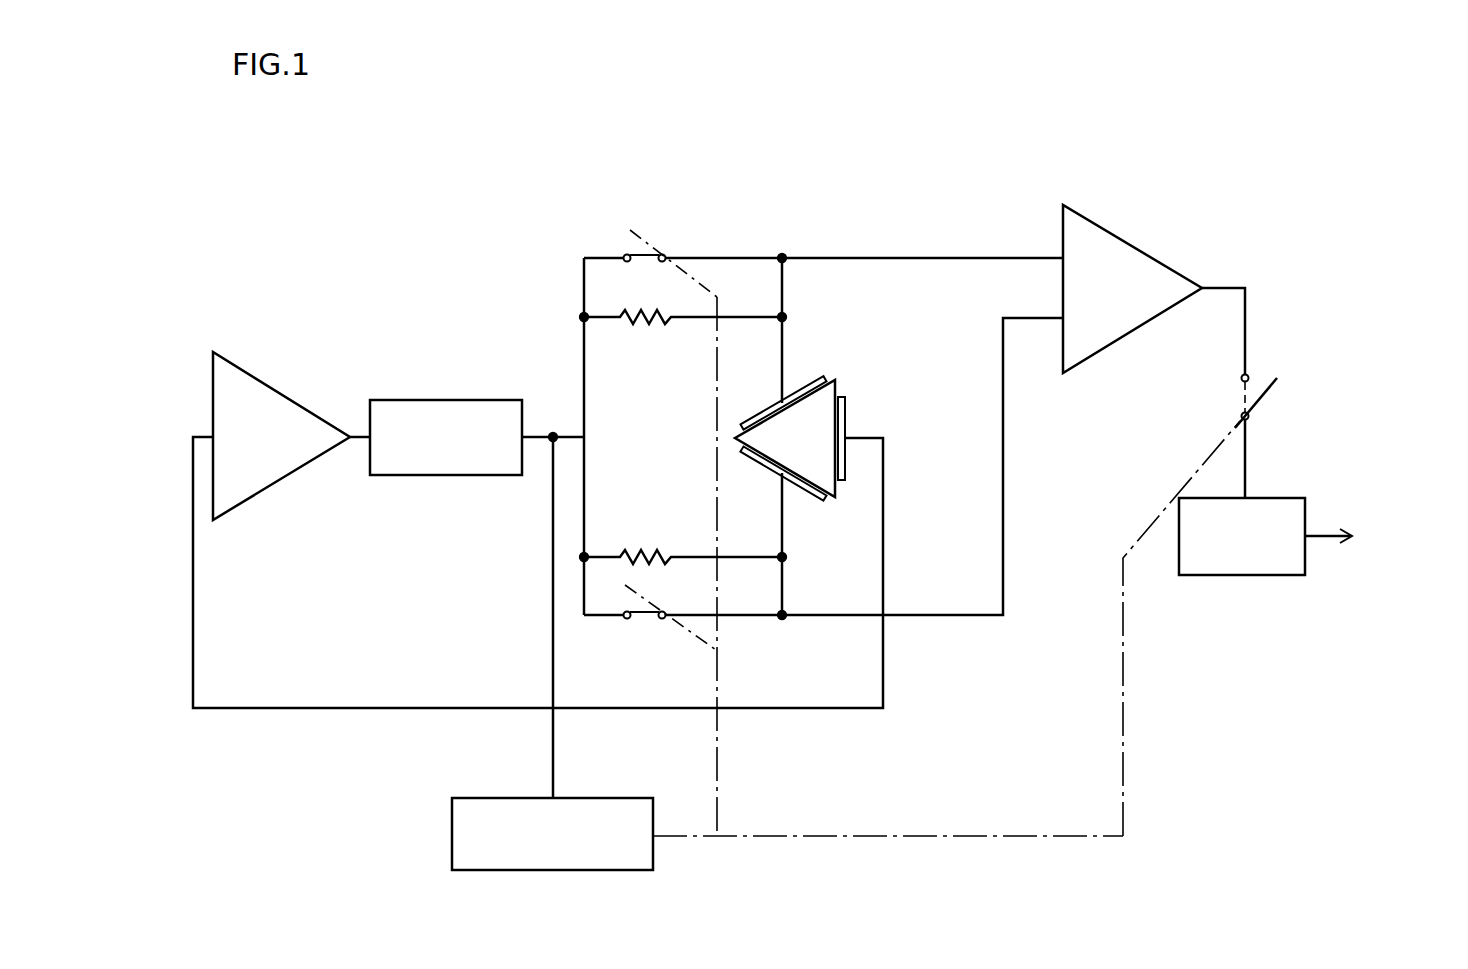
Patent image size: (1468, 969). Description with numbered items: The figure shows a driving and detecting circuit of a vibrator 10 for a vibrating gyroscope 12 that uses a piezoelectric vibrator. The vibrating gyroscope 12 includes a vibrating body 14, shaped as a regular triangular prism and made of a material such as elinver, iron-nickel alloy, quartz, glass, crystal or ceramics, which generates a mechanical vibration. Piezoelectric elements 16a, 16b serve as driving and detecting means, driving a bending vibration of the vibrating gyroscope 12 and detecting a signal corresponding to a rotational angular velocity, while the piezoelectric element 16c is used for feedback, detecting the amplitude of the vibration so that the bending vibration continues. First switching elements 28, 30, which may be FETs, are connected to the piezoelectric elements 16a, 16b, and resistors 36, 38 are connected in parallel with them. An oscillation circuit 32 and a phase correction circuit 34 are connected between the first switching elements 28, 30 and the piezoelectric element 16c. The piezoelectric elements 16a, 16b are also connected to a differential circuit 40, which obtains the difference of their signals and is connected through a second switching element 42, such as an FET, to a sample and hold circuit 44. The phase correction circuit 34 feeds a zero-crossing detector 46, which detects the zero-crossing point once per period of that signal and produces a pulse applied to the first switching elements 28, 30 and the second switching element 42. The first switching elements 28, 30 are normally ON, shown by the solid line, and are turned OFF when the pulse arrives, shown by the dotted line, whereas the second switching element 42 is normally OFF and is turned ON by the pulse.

The vibrator 10 is at (327, 243).
The vibrating gyroscope 12 is at (845, 364).
The vibrating body 14 is at (822, 477).
The piezoelectric element 16a is at (763, 458).
The piezoelectric element 16b is at (770, 410).
The piezoelectric element 16c is at (843, 420).
The first switching element 28 is at (638, 620).
The first switching element 30 is at (626, 254).
The oscillation circuit 32 is at (295, 410).
The phase correction circuit 34 is at (453, 400).
The resistor 36 is at (622, 552).
The resistor 38 is at (628, 324).
The differential circuit 40 is at (1147, 260).
The second switching element 42 is at (1237, 408).
The sample and hold circuit 44 is at (1228, 577).
The zero-crossing detector 46 is at (452, 855).